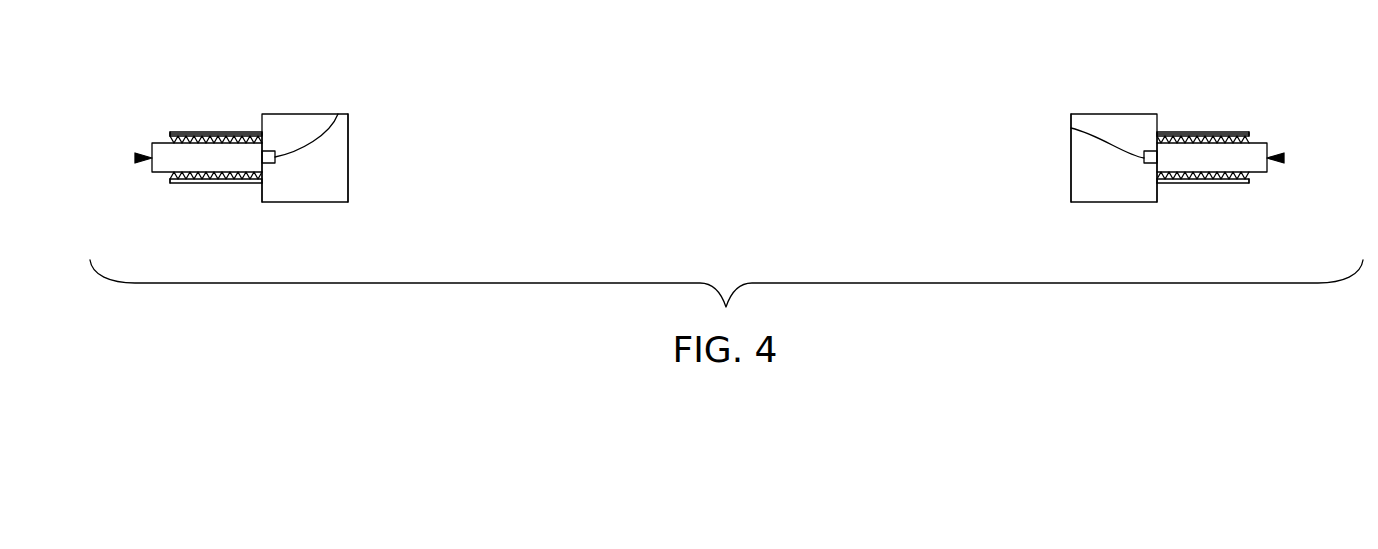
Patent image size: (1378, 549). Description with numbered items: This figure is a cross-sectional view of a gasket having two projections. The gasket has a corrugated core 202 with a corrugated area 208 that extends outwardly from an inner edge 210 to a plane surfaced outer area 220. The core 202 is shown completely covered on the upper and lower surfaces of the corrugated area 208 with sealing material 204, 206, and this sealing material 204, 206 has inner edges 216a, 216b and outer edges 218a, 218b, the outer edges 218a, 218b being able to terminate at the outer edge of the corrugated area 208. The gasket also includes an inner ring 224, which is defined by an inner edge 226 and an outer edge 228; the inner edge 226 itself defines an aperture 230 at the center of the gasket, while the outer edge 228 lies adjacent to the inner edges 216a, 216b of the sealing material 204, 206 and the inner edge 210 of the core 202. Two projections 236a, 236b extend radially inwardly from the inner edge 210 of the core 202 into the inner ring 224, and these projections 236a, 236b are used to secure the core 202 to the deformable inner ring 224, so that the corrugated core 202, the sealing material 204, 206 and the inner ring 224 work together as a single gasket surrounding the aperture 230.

The corrugated core 202 is at (137, 158).
The sealing material 204 is at (227, 134).
The sealing material 206 is at (177, 183).
The corrugated area 208 is at (207, 133).
The inner edge 210 is at (243, 141).
The inner edge 216a is at (258, 142).
The inner edge 216b is at (260, 175).
The outer edge 218a is at (165, 134).
The outer edge 218b is at (165, 183).
The plane surfaced outer area 220 is at (157, 141).
The inner ring 224 is at (330, 197).
The inner edge 226 is at (348, 178).
The outer edge 228 is at (262, 183).
The aperture 230 is at (706, 173).
The projection 236a is at (338, 114).
The projection 236b is at (1071, 128).